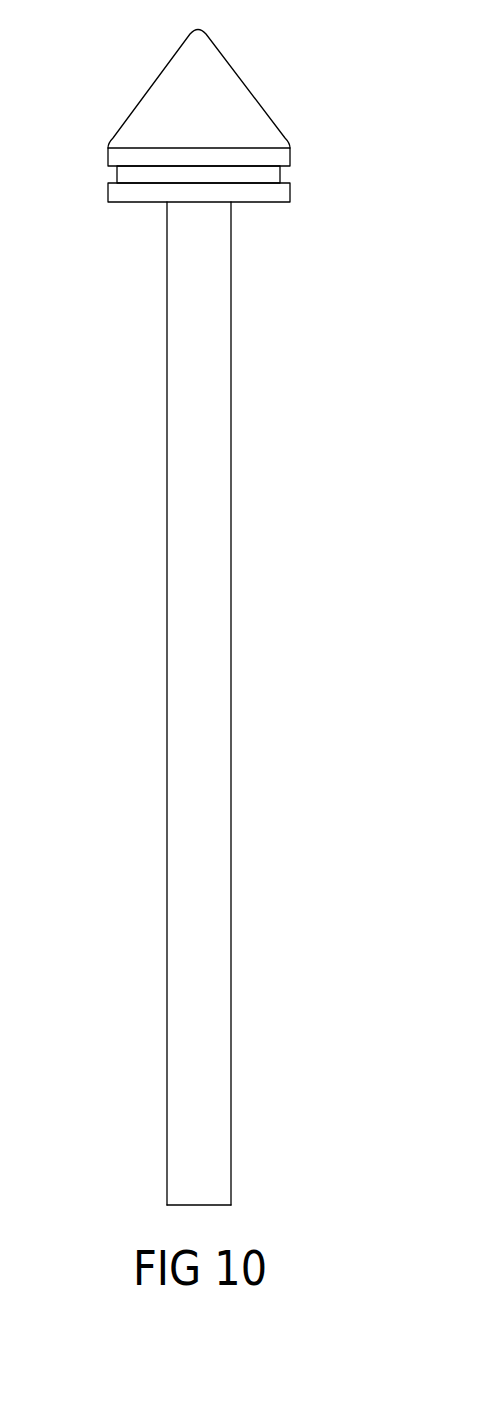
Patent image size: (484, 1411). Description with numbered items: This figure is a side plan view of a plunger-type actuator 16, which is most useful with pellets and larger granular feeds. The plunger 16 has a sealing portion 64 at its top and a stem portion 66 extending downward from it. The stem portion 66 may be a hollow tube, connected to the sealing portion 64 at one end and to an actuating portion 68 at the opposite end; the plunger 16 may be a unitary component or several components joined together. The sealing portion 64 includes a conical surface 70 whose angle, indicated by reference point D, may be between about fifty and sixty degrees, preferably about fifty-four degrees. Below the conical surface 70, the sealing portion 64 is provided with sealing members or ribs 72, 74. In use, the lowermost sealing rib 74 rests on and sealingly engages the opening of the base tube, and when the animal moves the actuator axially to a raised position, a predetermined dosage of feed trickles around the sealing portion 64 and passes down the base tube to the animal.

The plunger-type actuator 16 is at (290, 80).
The sealing portion 64 is at (194, 126).
The stem portion 66 is at (177, 473).
The actuating portion 68 is at (198, 1206).
The conical surface 70 is at (192, 67).
The sealing rib 72 is at (285, 157).
The lowermost sealing rib 74 is at (285, 193).
The angle of the conical surface D is at (160, 80).